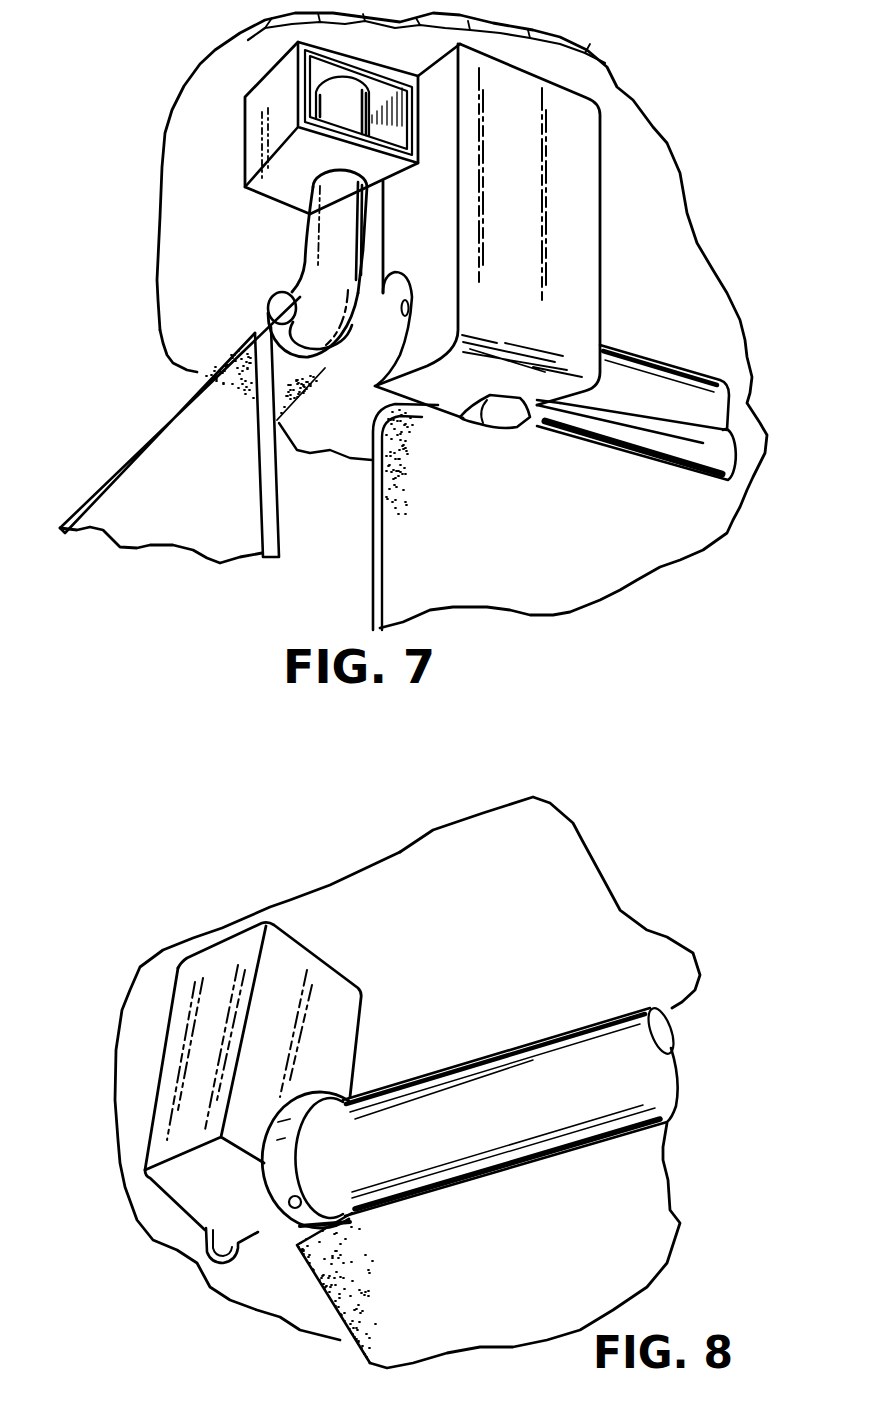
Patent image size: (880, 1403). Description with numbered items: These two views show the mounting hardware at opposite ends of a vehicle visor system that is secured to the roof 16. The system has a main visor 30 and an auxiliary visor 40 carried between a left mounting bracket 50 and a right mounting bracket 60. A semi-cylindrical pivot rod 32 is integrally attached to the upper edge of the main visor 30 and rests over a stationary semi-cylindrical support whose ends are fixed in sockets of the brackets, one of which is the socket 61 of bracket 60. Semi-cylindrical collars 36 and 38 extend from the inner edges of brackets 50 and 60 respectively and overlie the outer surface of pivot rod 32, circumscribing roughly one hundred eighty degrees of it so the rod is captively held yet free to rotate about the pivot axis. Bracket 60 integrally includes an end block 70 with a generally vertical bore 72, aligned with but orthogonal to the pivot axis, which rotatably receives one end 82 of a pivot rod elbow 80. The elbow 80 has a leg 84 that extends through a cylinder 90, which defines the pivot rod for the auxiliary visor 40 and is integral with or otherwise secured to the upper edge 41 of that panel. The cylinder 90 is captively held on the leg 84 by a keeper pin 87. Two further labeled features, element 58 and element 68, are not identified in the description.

In FIG. 8, the roof 16 is at (512, 929).
In FIG. 7, the main visor 30 is at (383, 497).
In FIG. 8, the main visor 30 is at (558, 1261).
In FIG. 7, the pivot rod 32 is at (653, 460).
In FIG. 8, the pivot rod 32 is at (465, 1060).
In FIG. 8, the collar 36 is at (330, 1243).
In FIG. 7, the collar 38 is at (503, 428).
In FIG. 7, the auxiliary visor 40 is at (163, 452).
In FIG. 7, the upper edge 41 is at (120, 463).
In FIG. 8, the mounting bracket 50 is at (158, 1008).
In FIG. 8, the housing face 58 is at (340, 1000).
In FIG. 7, the mounting bracket 60 is at (606, 322).
In FIG. 7, the socket 61 is at (414, 291).
In FIG. 7, the sleeve 68 is at (604, 364).
In FIG. 7, the end block 70 is at (255, 152).
In FIG. 7, the bore 72 is at (278, 239).
In FIG. 7, the pivot rod elbow 80 is at (300, 249).
In FIG. 7, the end 82 is at (370, 210).
In FIG. 7, the leg 84 is at (268, 312).
In FIG. 8, the keeper pin 87 is at (203, 1250).
In FIG. 7, the cylinder 90 is at (297, 393).